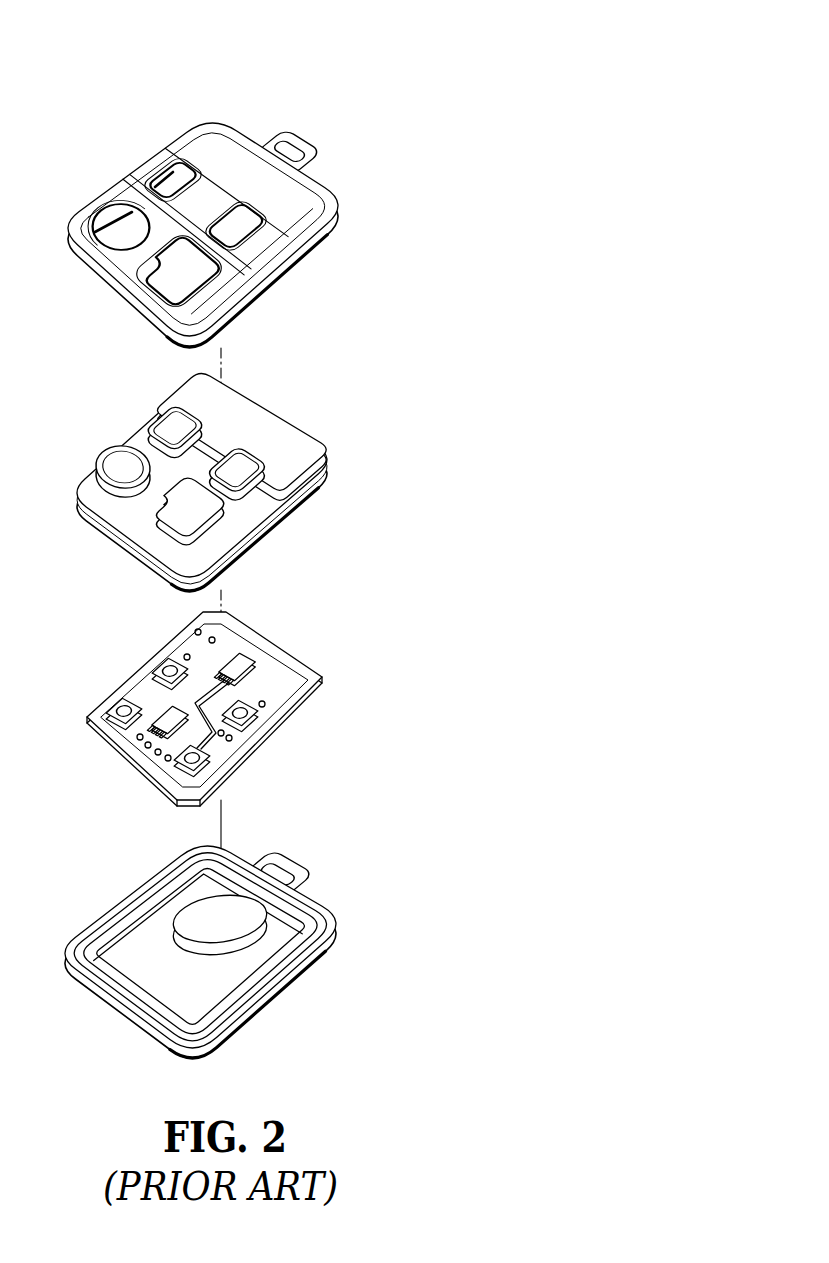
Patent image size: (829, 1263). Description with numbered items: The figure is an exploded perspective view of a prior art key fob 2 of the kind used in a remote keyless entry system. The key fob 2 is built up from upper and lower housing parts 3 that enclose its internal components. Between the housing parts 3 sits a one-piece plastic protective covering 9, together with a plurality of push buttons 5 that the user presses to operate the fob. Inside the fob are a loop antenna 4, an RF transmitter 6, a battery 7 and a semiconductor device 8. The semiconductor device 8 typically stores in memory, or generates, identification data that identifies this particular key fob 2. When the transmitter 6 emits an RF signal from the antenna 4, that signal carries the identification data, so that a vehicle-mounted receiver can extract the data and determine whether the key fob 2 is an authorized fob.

The key fob 2 is at (304, 62).
The upper and lower housing parts 3 is at (330, 180).
The loop antenna 4 is at (293, 698).
The push buttons 5 is at (170, 668).
The RF transmitter 6 is at (238, 664).
The battery 7 is at (243, 921).
The semiconductor device 8 is at (172, 717).
The one-piece plastic protective covering 9 is at (263, 398).